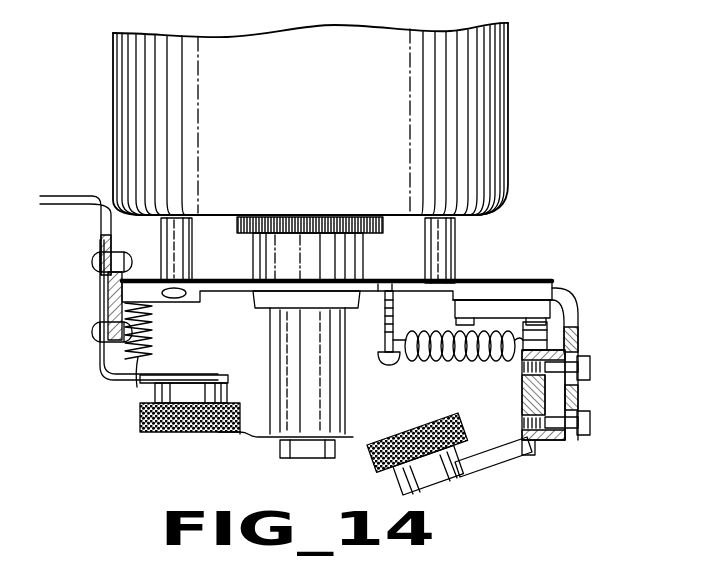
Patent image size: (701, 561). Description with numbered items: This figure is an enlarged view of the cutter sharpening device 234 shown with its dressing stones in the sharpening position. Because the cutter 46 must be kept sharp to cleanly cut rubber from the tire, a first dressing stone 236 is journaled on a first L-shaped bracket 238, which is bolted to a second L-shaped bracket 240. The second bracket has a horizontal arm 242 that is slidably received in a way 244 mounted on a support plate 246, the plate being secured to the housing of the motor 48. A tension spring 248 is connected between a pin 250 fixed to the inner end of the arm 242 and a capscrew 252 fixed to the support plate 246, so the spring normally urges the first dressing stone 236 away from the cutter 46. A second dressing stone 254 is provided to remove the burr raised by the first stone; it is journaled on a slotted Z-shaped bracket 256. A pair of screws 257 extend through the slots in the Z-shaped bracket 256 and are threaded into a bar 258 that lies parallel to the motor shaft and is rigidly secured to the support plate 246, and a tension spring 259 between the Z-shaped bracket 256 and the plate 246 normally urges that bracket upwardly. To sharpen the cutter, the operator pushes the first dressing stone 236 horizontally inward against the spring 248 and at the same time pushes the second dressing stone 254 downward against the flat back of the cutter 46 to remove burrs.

The motor 48 is at (312, 115).
The cutter 46 is at (258, 438).
The cutter sharpening device 234 is at (550, 279).
The first dressing stone 236 is at (420, 432).
The first L-shaped bracket 238 is at (505, 458).
The second L-shaped bracket 240 is at (580, 322).
The horizontal arm 242 is at (557, 297).
The way 244 is at (418, 288).
The support plate 246 is at (380, 283).
The tension spring 248 is at (490, 362).
The pin 250 is at (383, 338).
The capscrew 252 is at (570, 344).
The second dressing stone 254 is at (140, 415).
The Z-shaped bracket 256 is at (100, 370).
The screws 257 is at (92, 262).
The bar 258 is at (112, 300).
The tension spring 259 is at (155, 322).